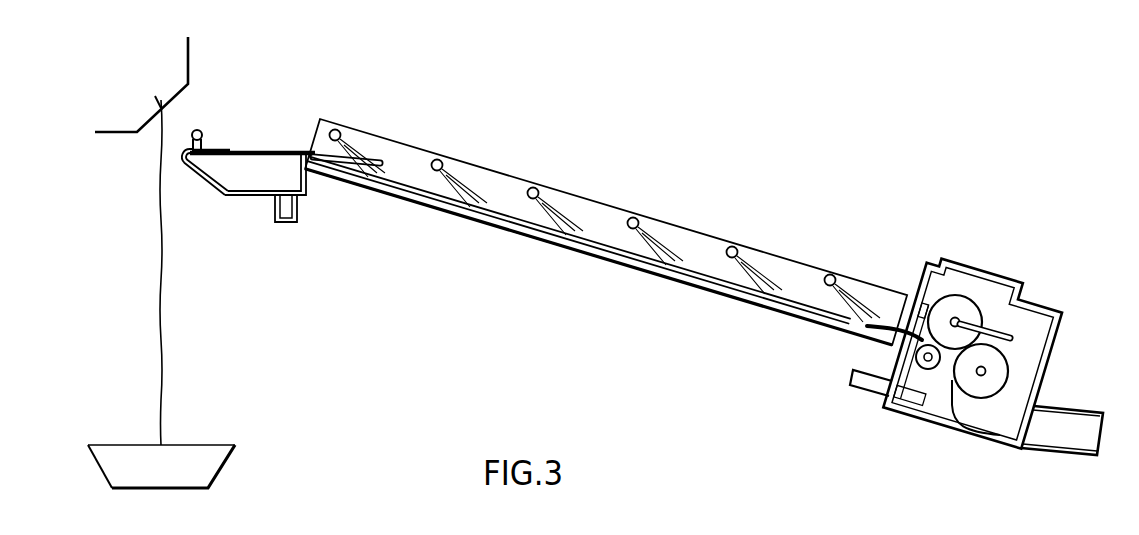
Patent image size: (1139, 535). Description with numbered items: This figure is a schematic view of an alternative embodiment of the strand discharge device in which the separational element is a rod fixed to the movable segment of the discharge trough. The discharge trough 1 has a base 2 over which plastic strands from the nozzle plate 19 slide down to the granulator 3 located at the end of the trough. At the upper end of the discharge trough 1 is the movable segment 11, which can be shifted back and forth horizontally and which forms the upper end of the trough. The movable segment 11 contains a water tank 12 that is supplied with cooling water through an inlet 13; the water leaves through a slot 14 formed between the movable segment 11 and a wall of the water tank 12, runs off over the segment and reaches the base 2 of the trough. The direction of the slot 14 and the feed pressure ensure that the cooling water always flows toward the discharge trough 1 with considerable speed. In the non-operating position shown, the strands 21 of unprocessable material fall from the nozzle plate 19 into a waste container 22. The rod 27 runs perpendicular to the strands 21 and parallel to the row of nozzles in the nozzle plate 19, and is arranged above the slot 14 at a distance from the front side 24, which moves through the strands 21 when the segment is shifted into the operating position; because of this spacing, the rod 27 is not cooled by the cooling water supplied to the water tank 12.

The discharge trough 1 is at (602, 223).
The base 2 is at (700, 268).
The granulator 3 is at (1030, 328).
The movable segment 11 is at (268, 154).
The water tank 12 is at (237, 173).
The inlet 13 is at (289, 223).
The slot 14 is at (208, 148).
The nozzle plate 19 is at (180, 85).
The strands 21 is at (158, 320).
The waste container 22 is at (203, 457).
The front side 24 is at (180, 160).
The rod 27 is at (201, 131).